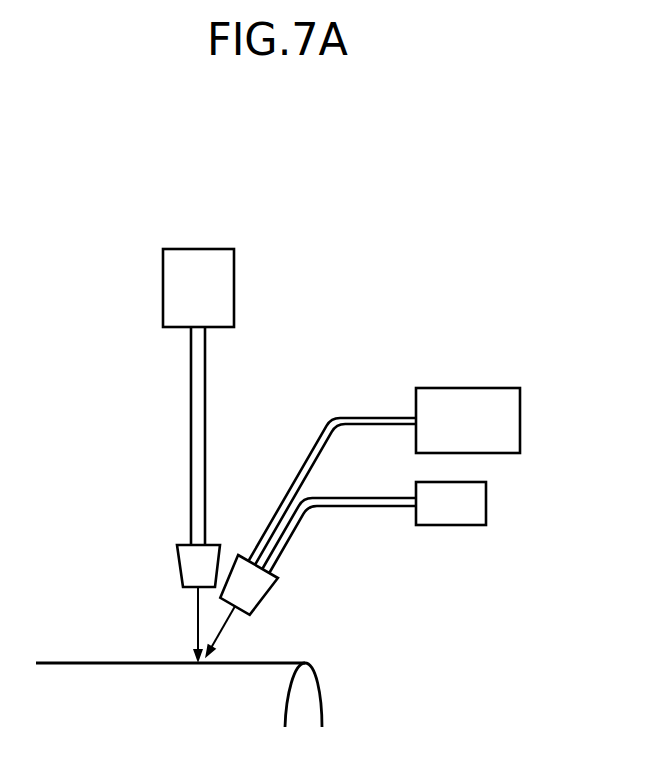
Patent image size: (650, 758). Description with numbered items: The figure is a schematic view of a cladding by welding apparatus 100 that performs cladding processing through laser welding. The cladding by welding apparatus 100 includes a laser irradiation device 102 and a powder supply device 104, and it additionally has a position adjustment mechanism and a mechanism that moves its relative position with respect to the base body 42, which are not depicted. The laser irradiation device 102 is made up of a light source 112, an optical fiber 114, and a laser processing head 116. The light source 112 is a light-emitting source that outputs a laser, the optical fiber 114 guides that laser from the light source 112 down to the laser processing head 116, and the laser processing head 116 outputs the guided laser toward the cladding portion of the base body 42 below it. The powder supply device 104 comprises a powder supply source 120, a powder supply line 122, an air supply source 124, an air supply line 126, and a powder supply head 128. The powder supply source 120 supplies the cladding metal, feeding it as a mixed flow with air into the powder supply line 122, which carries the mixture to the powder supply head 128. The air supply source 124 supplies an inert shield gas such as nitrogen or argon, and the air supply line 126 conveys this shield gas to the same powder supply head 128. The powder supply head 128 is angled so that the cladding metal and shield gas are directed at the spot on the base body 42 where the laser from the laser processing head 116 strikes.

The cladding by welding apparatus 100 is at (369, 171).
The laser irradiation device 102 is at (215, 224).
The powder supply device 104 is at (499, 358).
The light source 112 is at (234, 285).
The optical fiber 114 is at (205, 408).
The laser processing head 116 is at (177, 565).
The powder supply source 120 is at (520, 418).
The powder supply line 122 is at (372, 417).
The air supply source 124 is at (486, 503).
The air supply line 126 is at (371, 497).
The powder supply head 128 is at (265, 595).
The base body 42 is at (312, 695).